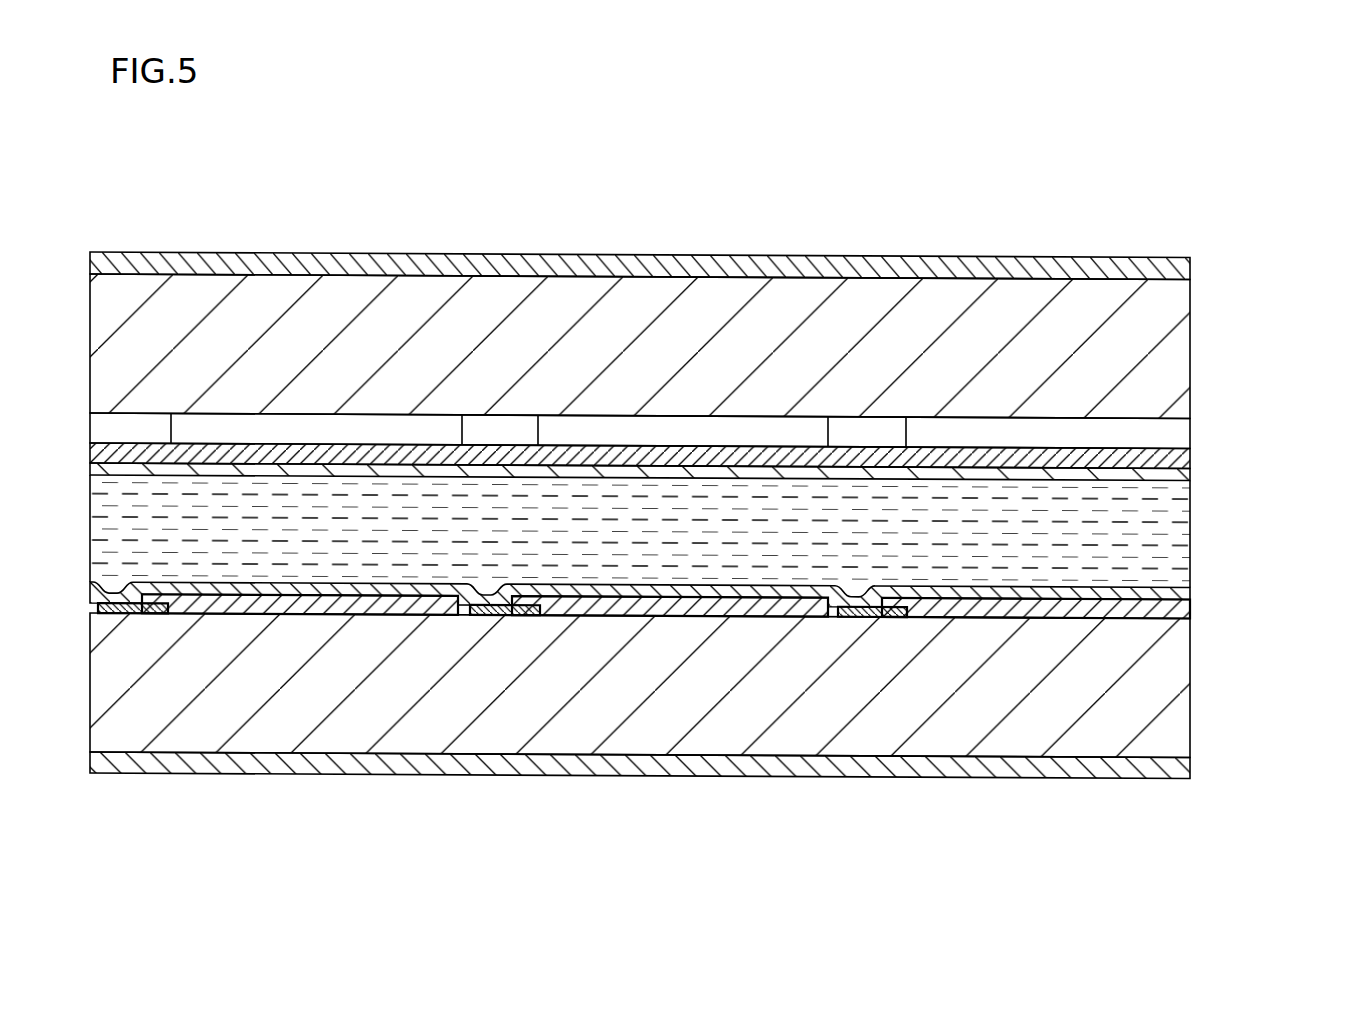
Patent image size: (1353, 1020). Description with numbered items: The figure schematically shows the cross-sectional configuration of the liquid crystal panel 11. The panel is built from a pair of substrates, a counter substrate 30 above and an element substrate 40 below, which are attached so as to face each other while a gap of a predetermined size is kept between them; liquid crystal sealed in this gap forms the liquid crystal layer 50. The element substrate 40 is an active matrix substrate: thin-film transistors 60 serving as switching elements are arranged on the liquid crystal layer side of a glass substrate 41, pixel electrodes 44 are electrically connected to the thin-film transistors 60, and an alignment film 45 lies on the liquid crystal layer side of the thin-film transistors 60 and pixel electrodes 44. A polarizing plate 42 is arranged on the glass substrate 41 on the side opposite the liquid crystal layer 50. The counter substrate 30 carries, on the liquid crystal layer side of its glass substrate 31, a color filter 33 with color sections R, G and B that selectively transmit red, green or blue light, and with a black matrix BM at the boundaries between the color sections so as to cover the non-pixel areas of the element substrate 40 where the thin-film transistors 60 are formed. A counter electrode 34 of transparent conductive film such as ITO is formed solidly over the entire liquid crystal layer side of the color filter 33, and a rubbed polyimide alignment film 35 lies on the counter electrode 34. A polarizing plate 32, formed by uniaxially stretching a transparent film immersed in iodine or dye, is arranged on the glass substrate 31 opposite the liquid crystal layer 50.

The liquid crystal panel 11 is at (1108, 174).
The counter substrate 30 is at (714, 367).
The glass substrate 31 is at (1165, 354).
The polarizing plate 32 is at (1165, 264).
The color filter 33 is at (1173, 426).
The counter electrode 34 is at (1172, 456).
The alignment film 35 is at (685, 465).
The element substrate 40 is at (714, 709).
The glass substrate 41 is at (1170, 714).
The polarizing plate 42 is at (685, 762).
The pixel electrode 44 is at (1097, 602).
The alignment film 45 is at (1165, 588).
The liquid crystal layer 50 is at (1150, 548).
The thin-film transistor 60 is at (140, 614).